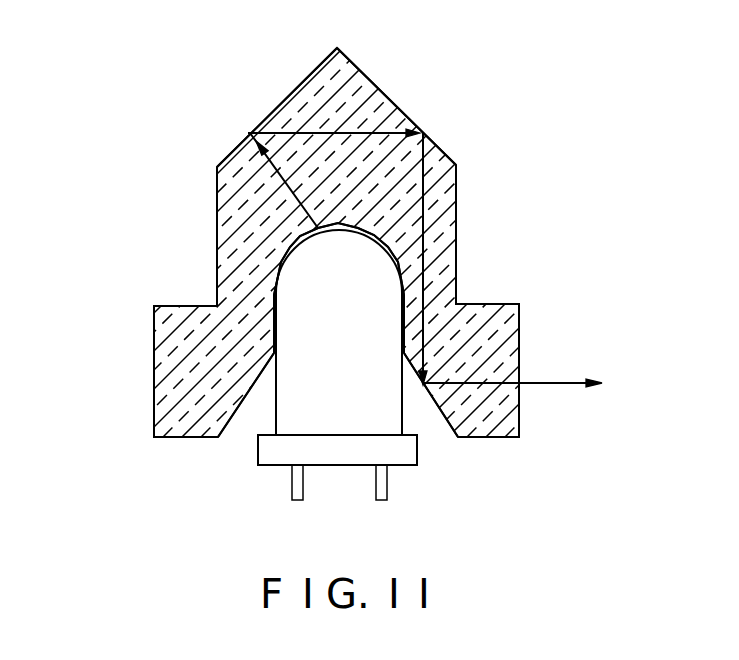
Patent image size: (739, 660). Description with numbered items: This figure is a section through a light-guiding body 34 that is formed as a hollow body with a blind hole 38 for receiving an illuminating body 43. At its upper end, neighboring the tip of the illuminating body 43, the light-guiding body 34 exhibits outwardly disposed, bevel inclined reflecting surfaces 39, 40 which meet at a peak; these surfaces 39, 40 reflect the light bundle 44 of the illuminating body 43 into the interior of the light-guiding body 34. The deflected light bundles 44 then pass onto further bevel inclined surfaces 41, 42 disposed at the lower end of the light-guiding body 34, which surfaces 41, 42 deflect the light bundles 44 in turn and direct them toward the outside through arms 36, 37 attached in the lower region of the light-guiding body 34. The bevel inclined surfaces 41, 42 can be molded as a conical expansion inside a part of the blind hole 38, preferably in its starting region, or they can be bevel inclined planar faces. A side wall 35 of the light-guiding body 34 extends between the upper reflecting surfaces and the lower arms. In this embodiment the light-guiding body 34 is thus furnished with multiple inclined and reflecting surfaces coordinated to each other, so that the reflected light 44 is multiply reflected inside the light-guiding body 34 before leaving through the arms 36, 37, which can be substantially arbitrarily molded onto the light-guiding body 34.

The light-guiding body 34 is at (240, 290).
The side wall 35 is at (457, 232).
The arm 36 is at (173, 352).
The arm 37 is at (500, 405).
The blind hole 38 is at (291, 248).
The bevel inclined reflecting surface 39 is at (390, 98).
The bevel inclined reflecting surface 40 is at (303, 80).
The bevel inclined surface 41 is at (233, 410).
The bevel inclined surface 42 is at (423, 385).
The illuminating body 43 is at (355, 343).
The light bundle 44 is at (547, 382).